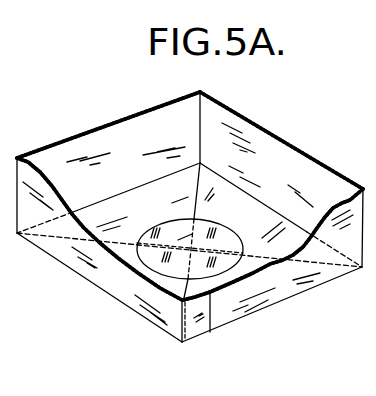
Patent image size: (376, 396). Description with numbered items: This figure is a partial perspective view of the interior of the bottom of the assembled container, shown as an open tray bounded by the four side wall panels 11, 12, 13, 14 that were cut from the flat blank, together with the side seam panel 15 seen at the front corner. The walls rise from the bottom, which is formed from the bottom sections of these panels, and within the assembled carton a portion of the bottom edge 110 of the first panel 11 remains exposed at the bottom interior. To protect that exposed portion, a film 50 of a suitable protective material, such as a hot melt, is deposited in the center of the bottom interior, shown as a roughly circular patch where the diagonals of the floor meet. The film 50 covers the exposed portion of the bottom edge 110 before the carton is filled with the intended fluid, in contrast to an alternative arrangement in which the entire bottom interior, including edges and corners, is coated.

The side wall panel 11 is at (291, 290).
The side wall panel 12 is at (290, 155).
The side wall panel 13 is at (108, 137).
The side wall panel 14 is at (102, 283).
The side seam panel 15 is at (197, 328).
The film 50 is at (226, 233).
The bottom edge 110 is at (178, 240).